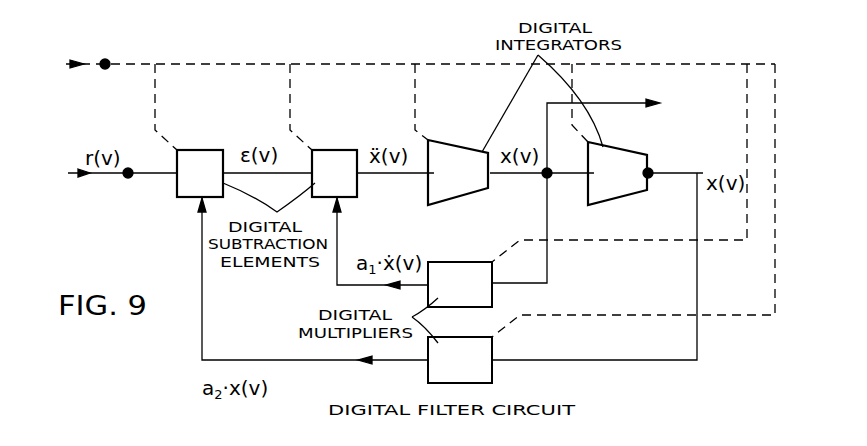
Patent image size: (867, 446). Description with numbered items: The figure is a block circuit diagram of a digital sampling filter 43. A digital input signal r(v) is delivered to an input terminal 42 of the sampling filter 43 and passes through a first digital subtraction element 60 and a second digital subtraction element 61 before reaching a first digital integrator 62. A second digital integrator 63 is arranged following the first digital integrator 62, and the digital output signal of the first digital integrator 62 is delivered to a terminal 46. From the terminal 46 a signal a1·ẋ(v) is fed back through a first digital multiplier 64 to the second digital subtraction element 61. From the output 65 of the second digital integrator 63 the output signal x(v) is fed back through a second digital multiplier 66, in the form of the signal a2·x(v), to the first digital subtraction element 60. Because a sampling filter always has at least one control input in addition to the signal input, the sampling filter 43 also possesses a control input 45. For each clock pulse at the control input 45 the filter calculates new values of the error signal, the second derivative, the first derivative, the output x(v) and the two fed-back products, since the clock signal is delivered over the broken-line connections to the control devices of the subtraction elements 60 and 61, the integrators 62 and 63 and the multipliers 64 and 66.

The input terminal 42 is at (128, 179).
The sampling filter 43 is at (356, 102).
The control input 45 is at (105, 70).
The terminal 46 is at (549, 170).
The first digital subtraction element 60 is at (216, 141).
The second digital subtraction element 61 is at (347, 141).
The first digital integrator 62 is at (482, 140).
The second digital integrator 63 is at (622, 149).
The first digital multiplier 64 is at (466, 262).
The output 65 is at (650, 170).
The second digital multiplier 66 is at (472, 337).